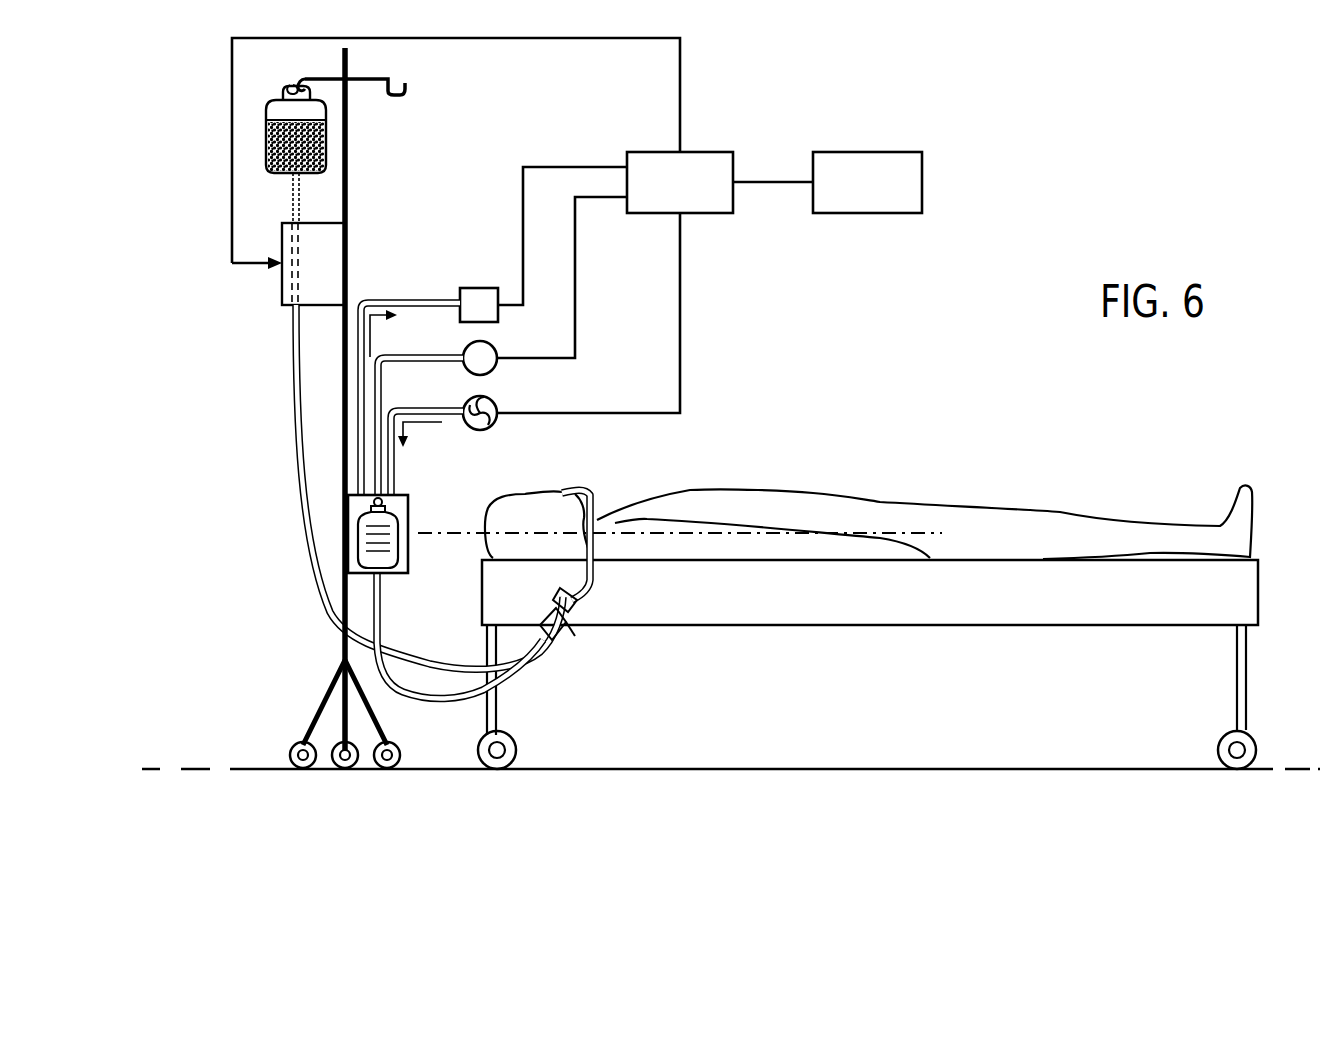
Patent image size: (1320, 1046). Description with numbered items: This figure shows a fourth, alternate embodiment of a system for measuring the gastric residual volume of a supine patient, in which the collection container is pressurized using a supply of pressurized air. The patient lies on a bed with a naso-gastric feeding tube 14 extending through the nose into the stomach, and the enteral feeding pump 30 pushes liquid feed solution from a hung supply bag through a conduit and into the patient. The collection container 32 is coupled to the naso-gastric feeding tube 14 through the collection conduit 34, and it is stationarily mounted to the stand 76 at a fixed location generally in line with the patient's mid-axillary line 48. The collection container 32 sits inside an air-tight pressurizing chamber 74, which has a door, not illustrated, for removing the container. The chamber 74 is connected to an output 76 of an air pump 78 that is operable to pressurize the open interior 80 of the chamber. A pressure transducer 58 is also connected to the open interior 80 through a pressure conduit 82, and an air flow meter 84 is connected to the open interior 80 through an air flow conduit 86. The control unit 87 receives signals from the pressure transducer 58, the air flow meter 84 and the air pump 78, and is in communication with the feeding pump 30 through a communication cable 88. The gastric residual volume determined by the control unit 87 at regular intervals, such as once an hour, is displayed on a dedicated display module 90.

The naso-gastric feeding tube 14 is at (584, 491).
The enteral feeding pump 30 is at (282, 290).
The collection container 32 is at (407, 506).
The collection conduit 34 is at (381, 606).
The mid-axillary line 48 is at (904, 531).
The pressure transducer 58 is at (500, 345).
The pressurizing chamber 74 is at (414, 531).
The stand 76 is at (405, 407).
The air pump 78 is at (500, 402).
The open interior 80 is at (348, 503).
The pressure conduit 82 is at (395, 355).
The air flow meter 84 is at (478, 288).
The air flow conduit 86 is at (389, 300).
The control unit 87 is at (707, 151).
The communication cable 88 is at (458, 40).
The display module 90 is at (866, 213).